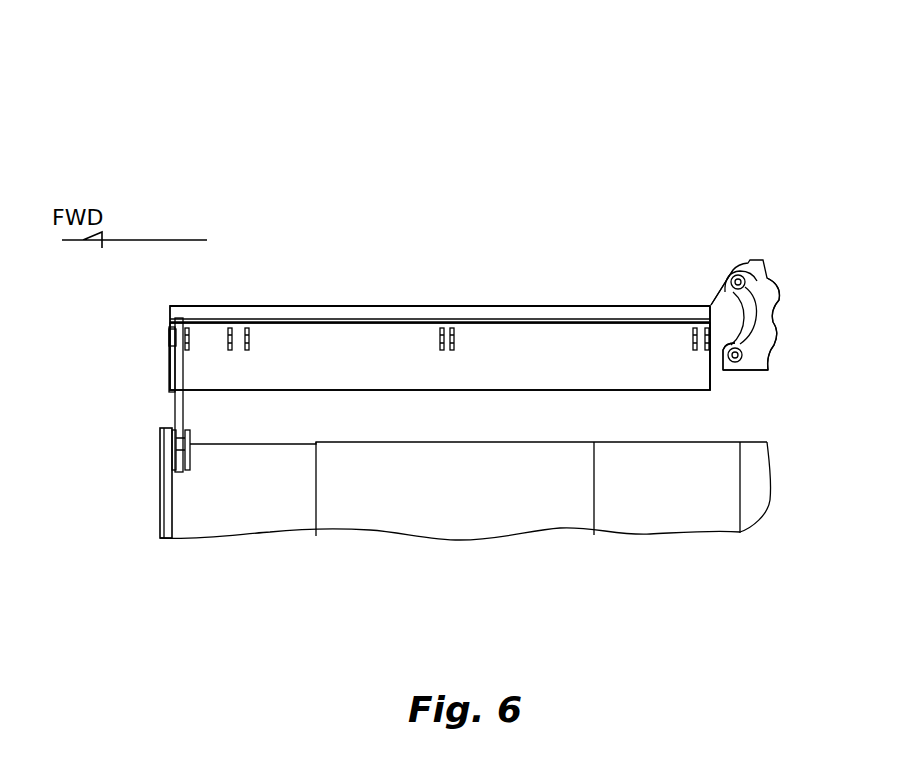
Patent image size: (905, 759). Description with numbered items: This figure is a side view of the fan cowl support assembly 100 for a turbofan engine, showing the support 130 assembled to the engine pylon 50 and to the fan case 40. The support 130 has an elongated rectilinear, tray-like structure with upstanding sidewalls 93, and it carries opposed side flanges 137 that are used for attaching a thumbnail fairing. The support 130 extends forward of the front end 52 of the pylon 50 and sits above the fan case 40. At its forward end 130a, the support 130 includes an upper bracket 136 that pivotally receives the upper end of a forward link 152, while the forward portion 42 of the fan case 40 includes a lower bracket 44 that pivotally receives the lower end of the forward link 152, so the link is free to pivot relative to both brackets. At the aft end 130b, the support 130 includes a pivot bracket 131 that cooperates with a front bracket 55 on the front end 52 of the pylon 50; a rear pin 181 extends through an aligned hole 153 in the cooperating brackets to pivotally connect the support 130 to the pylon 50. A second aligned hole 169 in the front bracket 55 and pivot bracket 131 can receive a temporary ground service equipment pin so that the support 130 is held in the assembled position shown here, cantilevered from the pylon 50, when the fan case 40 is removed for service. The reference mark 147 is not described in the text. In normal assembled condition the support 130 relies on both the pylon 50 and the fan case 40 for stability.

The fan cowl support assembly 100 is at (634, 73).
The support 130 is at (305, 306).
The forward end of the support 130a is at (170, 358).
The aft end of the support 130b is at (713, 333).
The pivot bracket 131 is at (718, 298).
The upper bracket 136 is at (170, 335).
The side flange 137 is at (471, 313).
The slots 147 is at (440, 338).
The forward link 152 is at (183, 408).
The aligned hole 153 is at (712, 372).
The aligned hole 169 is at (746, 280).
The rear pin 181 is at (743, 355).
The engine pylon 50 is at (779, 294).
The front end of the pylon 52 is at (757, 270).
The front bracket 55 is at (735, 350).
The upstanding sidewall 93 is at (573, 364).
The fan case 40 is at (466, 500).
The forward portion of the fan case 42 is at (180, 507).
The lower bracket 44 is at (165, 430).